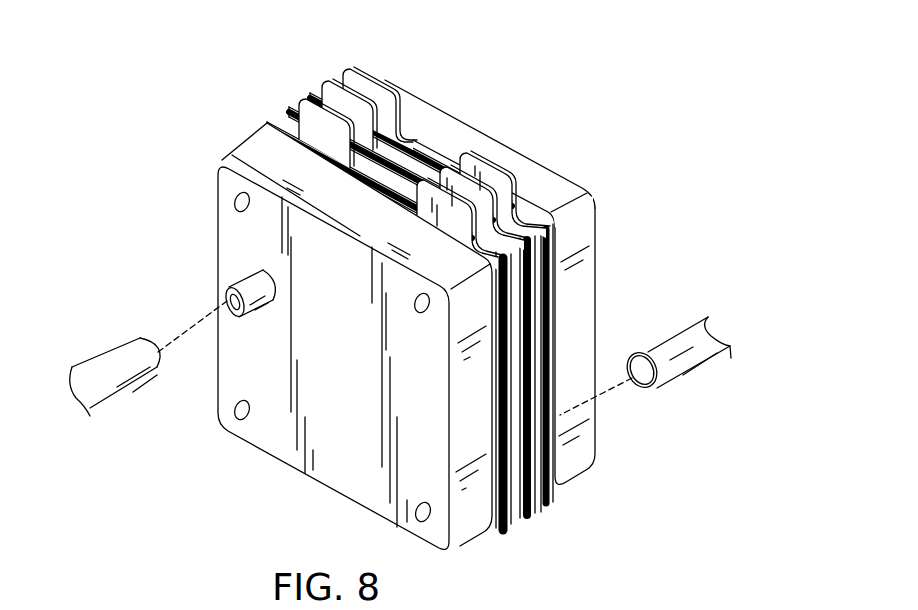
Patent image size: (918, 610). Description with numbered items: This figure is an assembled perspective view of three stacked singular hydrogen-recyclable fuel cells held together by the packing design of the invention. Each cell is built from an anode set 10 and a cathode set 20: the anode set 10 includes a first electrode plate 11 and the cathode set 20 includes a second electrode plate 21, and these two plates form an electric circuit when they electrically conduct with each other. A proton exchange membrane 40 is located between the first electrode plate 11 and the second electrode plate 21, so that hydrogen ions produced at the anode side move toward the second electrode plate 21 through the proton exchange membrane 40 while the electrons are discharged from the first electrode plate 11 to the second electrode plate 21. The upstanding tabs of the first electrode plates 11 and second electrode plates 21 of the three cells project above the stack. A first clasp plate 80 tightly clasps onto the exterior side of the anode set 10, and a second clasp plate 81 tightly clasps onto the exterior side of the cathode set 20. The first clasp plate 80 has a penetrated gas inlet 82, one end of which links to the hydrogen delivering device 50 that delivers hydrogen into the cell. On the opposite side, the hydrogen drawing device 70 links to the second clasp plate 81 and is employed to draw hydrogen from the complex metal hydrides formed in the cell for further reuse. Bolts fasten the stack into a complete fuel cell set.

The anode set 10 is at (513, 150).
The first electrode plate 11 is at (490, 164).
The cathode set 20 is at (400, 88).
The second electrode plate 21 is at (362, 66).
The proton exchange membrane 40 is at (314, 96).
The hydrogen delivering device 50 is at (106, 366).
The hydrogen drawing device 70 is at (686, 328).
The first clasp plate 80 is at (218, 370).
The second clasp plate 81 is at (592, 303).
The gas inlet 82 is at (228, 302).